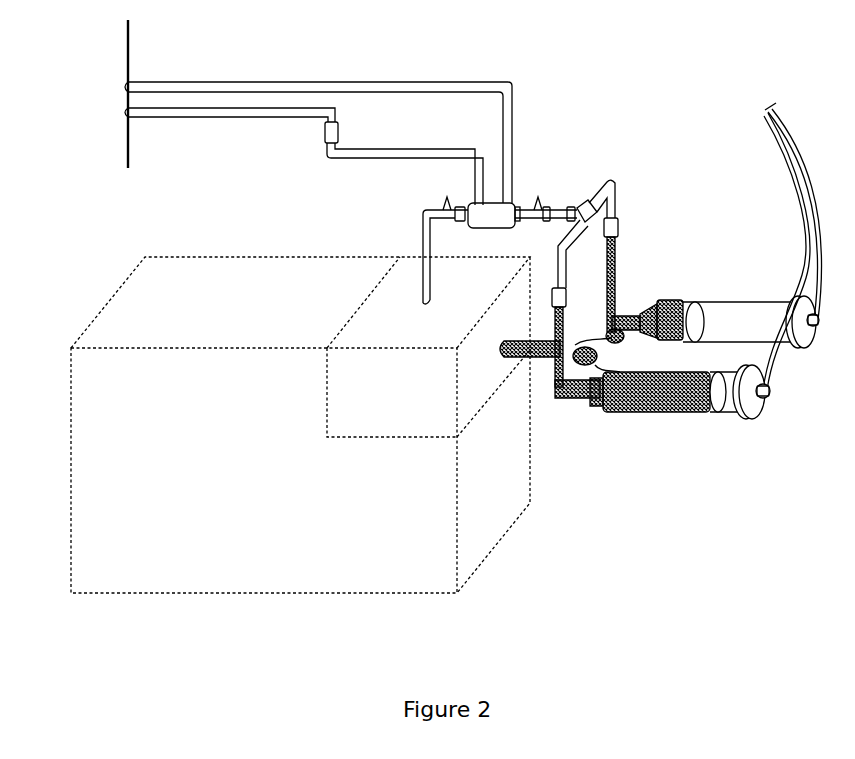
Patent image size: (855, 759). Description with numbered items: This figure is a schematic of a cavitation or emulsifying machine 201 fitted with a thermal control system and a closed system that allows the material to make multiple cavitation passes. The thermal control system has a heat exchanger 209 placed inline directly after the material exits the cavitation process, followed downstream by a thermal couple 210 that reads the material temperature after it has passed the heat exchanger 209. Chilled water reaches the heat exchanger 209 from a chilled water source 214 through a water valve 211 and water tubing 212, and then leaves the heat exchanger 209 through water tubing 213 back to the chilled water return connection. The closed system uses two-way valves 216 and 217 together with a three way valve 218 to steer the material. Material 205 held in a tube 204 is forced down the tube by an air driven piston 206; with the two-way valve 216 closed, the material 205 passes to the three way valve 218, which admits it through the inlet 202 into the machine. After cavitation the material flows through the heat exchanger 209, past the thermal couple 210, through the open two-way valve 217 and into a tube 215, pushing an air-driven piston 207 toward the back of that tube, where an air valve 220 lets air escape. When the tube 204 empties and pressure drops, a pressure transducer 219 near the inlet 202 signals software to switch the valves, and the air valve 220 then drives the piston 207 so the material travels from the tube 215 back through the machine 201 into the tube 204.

The cavitation or emulsifying machine 201 is at (283, 593).
The inlet 202 is at (540, 358).
The tube 204 is at (734, 420).
The material 205 is at (663, 412).
The air driven piston 206 is at (716, 414).
The air-driven piston 207 is at (696, 300).
The heat exchanger 209 is at (514, 204).
The thermal couple 210 is at (545, 207).
The water valve 211 is at (338, 130).
The water tubing 212 is at (355, 158).
The water tubing 213 is at (248, 82).
The chilled water source 214 is at (128, 40).
The tube 215 is at (742, 300).
The two-way valve 216 is at (566, 298).
The two-way valve 217 is at (618, 232).
The three way valve 218 is at (598, 356).
The pressure transducer 219 is at (622, 340).
The air valve 220 is at (819, 326).